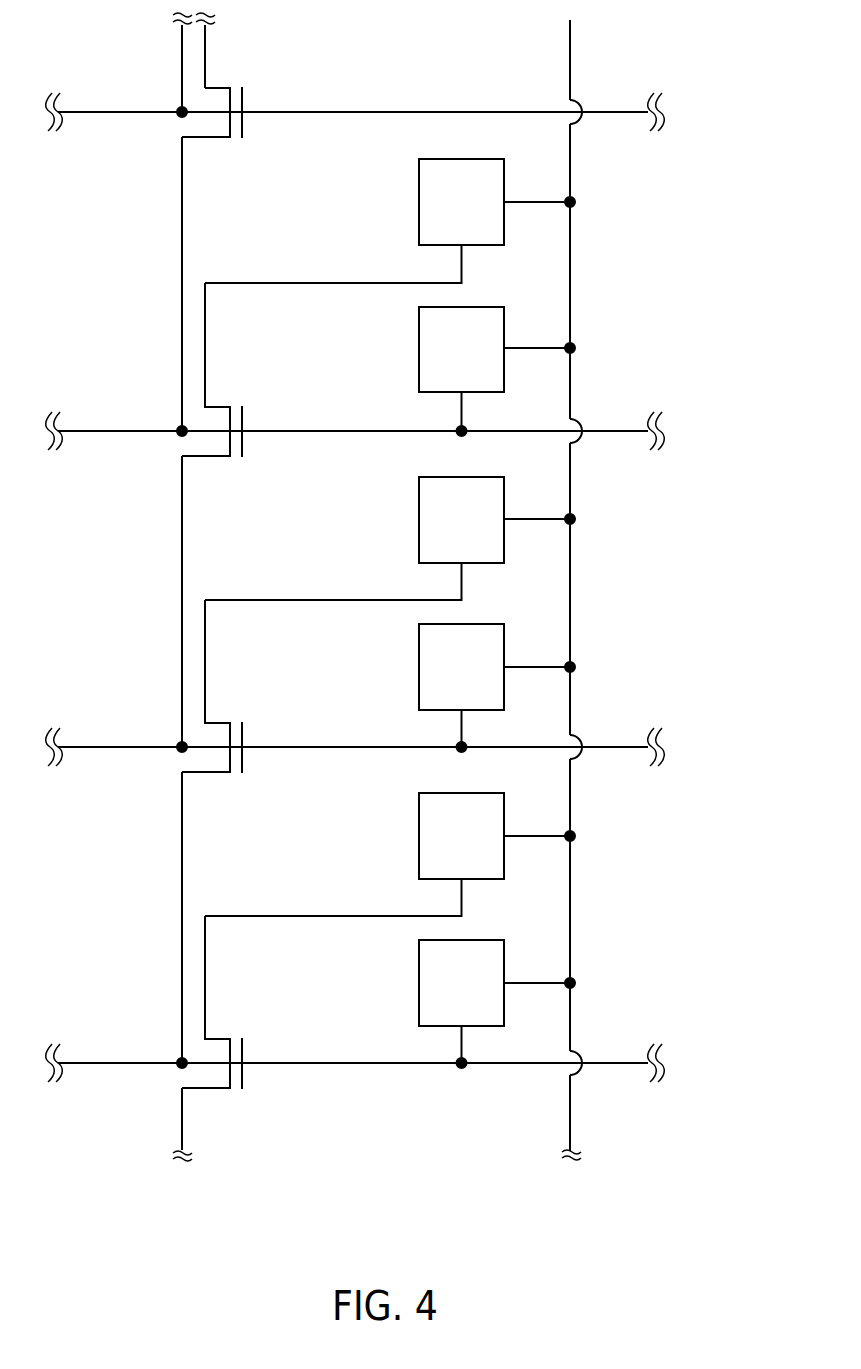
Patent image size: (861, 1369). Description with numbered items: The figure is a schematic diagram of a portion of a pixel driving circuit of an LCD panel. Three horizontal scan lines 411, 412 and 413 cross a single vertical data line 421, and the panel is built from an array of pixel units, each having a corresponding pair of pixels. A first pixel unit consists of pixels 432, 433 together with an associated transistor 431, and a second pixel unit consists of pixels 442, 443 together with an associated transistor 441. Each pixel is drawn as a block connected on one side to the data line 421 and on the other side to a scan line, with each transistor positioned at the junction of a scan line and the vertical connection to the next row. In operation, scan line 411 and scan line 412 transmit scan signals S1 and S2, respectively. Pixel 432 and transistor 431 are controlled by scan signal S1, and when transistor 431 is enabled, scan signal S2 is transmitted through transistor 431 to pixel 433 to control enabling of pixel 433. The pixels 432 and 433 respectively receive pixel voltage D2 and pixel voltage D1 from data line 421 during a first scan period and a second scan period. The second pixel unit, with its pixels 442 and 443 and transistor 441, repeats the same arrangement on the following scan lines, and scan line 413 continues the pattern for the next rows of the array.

The scan line 411 is at (112, 431).
The scan line 412 is at (112, 747).
The scan line 413 is at (112, 1063).
The data line 421 is at (570, 59).
The transistor 431 is at (218, 404).
The pixel 432 is at (497, 371).
The pixel 433 is at (390, 221).
The transistor 441 is at (218, 720).
The pixel 442 is at (497, 688).
The pixel 443 is at (390, 538).